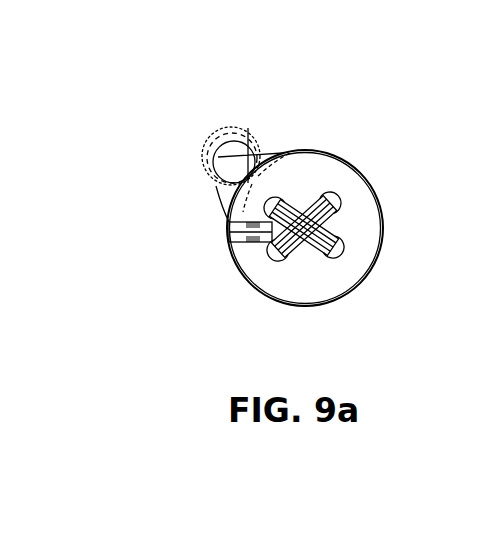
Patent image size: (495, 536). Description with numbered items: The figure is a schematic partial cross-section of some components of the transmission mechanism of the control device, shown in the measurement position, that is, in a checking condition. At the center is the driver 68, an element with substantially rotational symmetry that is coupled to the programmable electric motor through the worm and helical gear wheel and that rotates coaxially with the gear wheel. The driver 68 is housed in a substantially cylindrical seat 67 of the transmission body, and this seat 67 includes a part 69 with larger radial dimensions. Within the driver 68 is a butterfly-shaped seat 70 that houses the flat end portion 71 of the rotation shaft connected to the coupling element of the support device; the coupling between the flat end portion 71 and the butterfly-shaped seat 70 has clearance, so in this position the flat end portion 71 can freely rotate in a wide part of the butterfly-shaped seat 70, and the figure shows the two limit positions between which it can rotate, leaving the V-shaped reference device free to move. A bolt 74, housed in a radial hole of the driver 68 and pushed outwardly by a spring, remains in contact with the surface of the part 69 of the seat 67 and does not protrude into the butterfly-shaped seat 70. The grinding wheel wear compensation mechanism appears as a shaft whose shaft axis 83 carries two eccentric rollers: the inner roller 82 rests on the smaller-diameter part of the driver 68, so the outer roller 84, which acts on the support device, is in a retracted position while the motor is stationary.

The seat 67 is at (368, 270).
The driver 68 is at (305, 181).
The part with larger radial dimensions 69 is at (249, 288).
The butterfly-shaped seat 70 is at (337, 231).
The flat end portion 71 is at (283, 208).
The bolt 74 is at (235, 230).
The inner roller 82 is at (228, 148).
The shaft axis 83 is at (252, 157).
The outer roller 84 is at (215, 188).